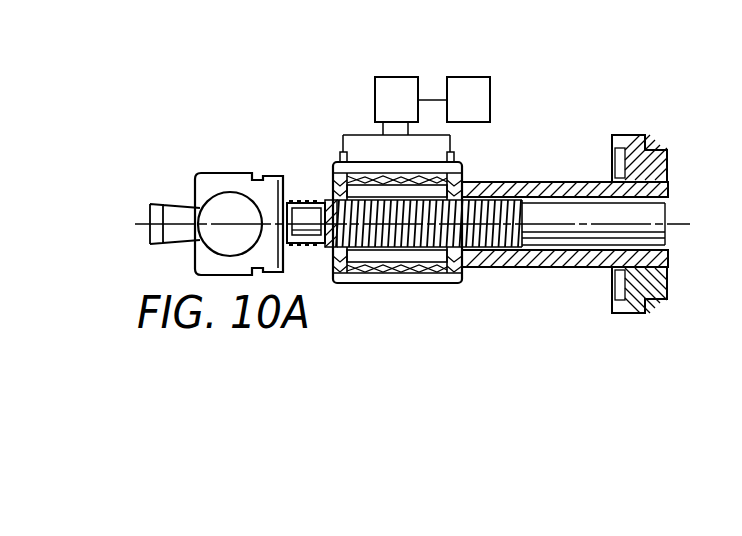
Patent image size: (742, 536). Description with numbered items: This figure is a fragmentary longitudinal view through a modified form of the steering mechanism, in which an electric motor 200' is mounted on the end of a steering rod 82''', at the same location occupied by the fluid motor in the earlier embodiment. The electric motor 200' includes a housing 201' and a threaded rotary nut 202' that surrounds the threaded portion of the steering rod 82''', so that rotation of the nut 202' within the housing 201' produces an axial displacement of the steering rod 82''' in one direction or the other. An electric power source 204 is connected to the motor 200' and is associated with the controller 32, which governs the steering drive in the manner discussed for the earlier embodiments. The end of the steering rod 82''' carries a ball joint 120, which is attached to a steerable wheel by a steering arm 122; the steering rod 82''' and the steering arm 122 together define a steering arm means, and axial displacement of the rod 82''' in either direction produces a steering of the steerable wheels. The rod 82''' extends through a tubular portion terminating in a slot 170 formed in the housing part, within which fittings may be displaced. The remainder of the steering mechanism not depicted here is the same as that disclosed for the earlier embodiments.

The steering arm 122 is at (170, 213).
The ball joint 120 is at (213, 182).
The housing 201' is at (359, 182).
The electric power source 204 is at (380, 100).
The controller 32 is at (482, 98).
The slot 170 is at (643, 137).
The electric motor 200' is at (397, 246).
The threaded rotary nut 202' is at (407, 254).
The steering rod 82''' is at (502, 252).